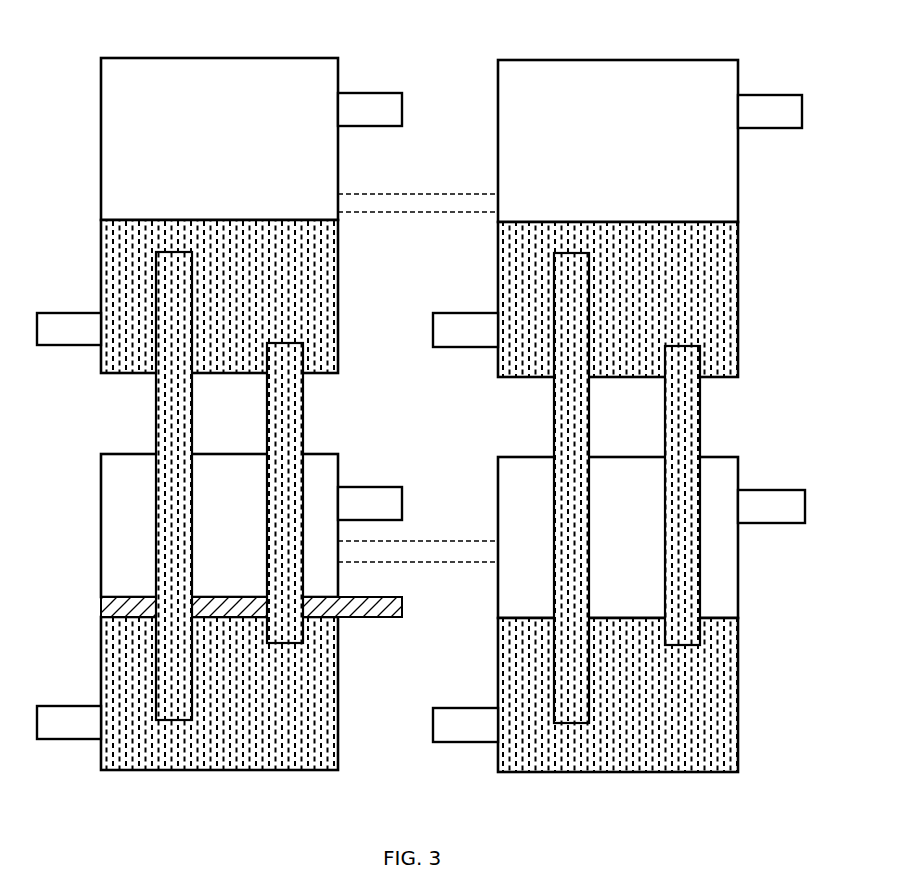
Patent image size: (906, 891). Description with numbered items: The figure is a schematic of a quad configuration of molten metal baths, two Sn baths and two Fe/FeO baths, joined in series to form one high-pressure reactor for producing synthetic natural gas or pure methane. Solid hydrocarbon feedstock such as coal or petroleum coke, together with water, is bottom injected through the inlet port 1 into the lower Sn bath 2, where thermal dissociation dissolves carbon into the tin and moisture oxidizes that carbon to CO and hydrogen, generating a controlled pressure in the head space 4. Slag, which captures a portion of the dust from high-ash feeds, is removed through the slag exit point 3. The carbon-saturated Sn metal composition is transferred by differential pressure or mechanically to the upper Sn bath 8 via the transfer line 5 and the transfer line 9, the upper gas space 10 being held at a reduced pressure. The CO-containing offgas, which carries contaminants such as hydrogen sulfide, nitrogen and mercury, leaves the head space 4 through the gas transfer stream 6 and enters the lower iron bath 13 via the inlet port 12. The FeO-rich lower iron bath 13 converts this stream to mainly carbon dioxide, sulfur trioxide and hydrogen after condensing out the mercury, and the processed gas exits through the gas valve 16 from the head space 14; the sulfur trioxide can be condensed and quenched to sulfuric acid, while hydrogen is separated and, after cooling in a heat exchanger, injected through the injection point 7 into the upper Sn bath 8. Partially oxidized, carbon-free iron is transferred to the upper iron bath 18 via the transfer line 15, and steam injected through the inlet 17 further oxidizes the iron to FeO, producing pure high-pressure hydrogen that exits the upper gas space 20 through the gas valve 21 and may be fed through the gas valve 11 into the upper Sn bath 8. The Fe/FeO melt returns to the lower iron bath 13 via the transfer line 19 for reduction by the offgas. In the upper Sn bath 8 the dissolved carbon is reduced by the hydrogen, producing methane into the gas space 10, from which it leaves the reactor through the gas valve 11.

The inlet port 1 is at (72, 741).
The lower Sn bath 2 is at (210, 705).
The slag exit point 3 is at (364, 618).
The head space 4 is at (210, 548).
The transfer line 5 is at (273, 450).
The gas transfer stream 6 is at (370, 487).
The injection point 7 is at (72, 346).
The upper Sn bath 8 is at (210, 316).
The transfer line 9 is at (162, 450).
The upper gas space 10 is at (206, 153).
The gas valve 11 is at (388, 128).
The inlet port 12 is at (470, 743).
The lower iron bath 13 is at (614, 705).
The head space 14 is at (614, 548).
The transfer line 15 is at (669, 450).
The gas valve 16 is at (772, 490).
The inlet 17 is at (470, 348).
The upper iron bath 18 is at (614, 316).
The transfer line 19 is at (558, 450).
The upper gas space 20 is at (604, 153).
The gas valve 21 is at (788, 129).